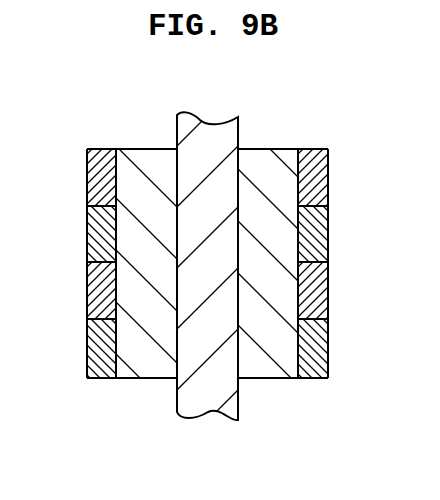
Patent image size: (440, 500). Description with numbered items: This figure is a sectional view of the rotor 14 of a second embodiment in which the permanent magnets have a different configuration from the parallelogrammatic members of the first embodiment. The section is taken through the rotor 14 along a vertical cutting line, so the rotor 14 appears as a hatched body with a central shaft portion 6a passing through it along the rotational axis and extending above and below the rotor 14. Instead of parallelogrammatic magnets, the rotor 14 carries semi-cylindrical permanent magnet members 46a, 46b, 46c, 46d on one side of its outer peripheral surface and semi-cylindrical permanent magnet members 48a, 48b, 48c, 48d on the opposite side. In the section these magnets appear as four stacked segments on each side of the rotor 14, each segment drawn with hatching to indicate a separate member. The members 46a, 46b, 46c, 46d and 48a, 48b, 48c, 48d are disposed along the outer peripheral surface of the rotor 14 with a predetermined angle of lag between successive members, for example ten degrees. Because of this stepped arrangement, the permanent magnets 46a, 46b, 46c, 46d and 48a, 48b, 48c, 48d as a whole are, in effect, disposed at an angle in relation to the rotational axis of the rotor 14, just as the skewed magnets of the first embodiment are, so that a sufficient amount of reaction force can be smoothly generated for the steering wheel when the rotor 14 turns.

The shaft 6a is at (210, 400).
The rotor 14 is at (277, 365).
The semi-cylindrical permanent magnet member 46a is at (320, 177).
The semi-cylindrical permanent magnet member 46b is at (320, 239).
The semi-cylindrical permanent magnet member 46c is at (320, 293).
The semi-cylindrical permanent magnet member 46d is at (318, 358).
The semi-cylindrical permanent magnet member 48a is at (93, 177).
The semi-cylindrical permanent magnet member 48b is at (95, 238).
The semi-cylindrical permanent magnet member 48c is at (97, 292).
The semi-cylindrical permanent magnet member 48d is at (97, 357).